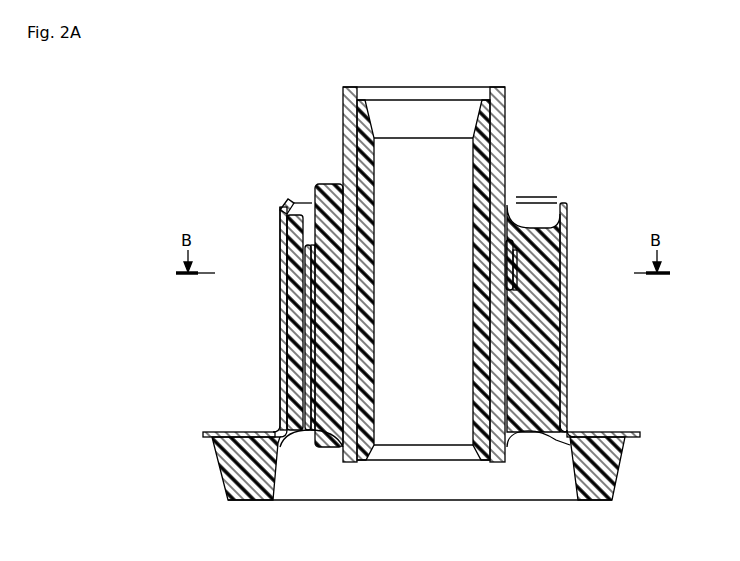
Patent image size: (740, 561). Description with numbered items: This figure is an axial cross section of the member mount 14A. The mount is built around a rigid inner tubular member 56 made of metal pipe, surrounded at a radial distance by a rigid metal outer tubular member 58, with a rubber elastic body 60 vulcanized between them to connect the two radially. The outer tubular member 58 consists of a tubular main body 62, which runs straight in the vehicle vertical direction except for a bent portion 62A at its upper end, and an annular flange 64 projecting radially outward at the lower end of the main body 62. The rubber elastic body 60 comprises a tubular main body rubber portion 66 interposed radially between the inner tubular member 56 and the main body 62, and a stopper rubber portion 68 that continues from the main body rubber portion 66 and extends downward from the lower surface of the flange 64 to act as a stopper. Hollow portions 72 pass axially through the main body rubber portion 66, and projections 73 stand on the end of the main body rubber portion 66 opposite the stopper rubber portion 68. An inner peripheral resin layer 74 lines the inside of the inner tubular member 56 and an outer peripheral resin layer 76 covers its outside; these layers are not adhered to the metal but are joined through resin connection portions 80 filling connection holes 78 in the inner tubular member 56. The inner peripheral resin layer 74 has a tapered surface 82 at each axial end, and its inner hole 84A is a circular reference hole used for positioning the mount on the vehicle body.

The member mount 14A is at (541, 192).
The inner tubular member 56 is at (511, 117).
The outer tubular member 58 is at (276, 264).
The rubber elastic body 60 is at (530, 446).
The main body 62 is at (284, 362).
The bent portion 62A is at (289, 202).
The flange 64 is at (605, 432).
The main body rubber portion 66 is at (538, 308).
The stopper rubber portion 68 is at (250, 468).
The hollow portions 72 is at (302, 320).
The projections 73 is at (322, 188).
The inner peripheral resin layer 74 is at (368, 178).
The outer peripheral resin layer 76 is at (515, 333).
The connection holes 78 is at (310, 246).
The resin connection portions 80 is at (348, 283).
The tapered surface 82 is at (370, 115).
The inner hole 84A is at (545, 372).